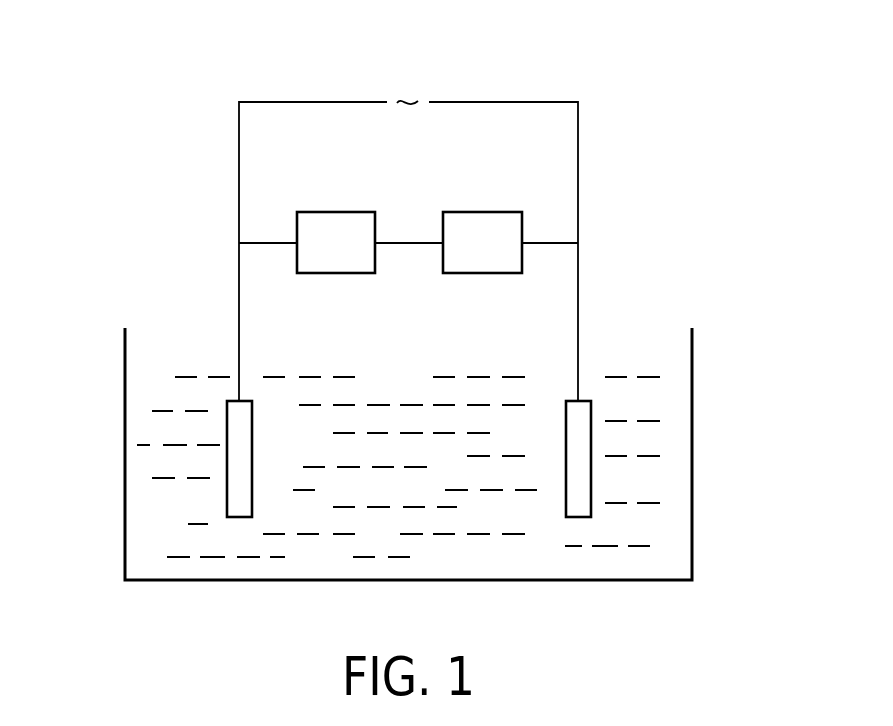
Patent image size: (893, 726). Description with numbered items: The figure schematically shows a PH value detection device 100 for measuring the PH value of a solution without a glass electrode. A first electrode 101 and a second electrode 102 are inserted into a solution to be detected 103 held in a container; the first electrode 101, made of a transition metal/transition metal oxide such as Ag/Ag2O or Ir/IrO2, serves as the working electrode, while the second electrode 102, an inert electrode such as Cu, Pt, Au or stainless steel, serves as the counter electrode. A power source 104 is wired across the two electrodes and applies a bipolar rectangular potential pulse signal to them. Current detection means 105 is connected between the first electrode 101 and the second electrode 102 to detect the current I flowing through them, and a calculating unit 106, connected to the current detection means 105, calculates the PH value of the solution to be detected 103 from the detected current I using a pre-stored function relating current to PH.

The PH value detection device 100 is at (669, 101).
The first electrode 101 is at (235, 491).
The second electrode 102 is at (583, 480).
The solution to be detected 103 is at (673, 535).
The power source 104 is at (408, 97).
The current detection means 105 is at (334, 224).
The calculating unit 106 is at (484, 224).